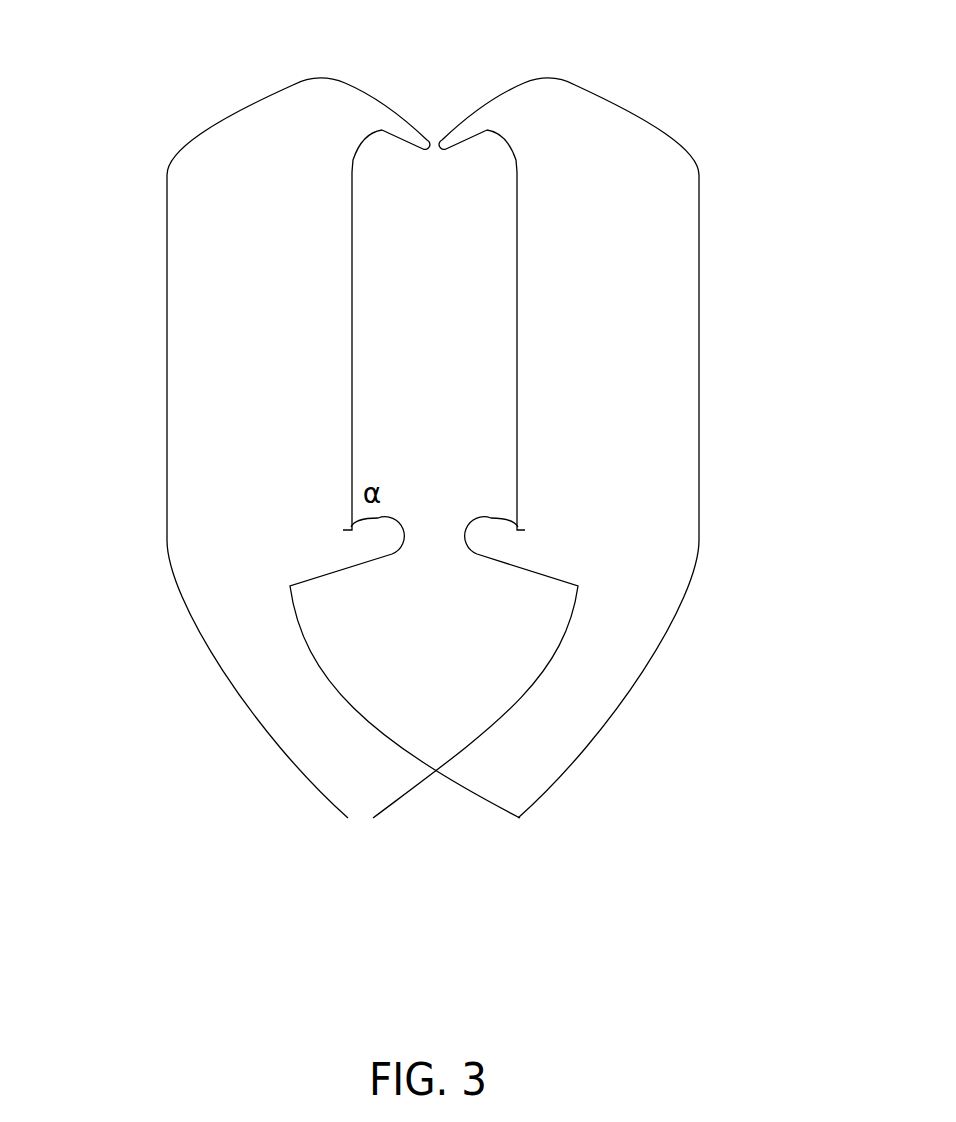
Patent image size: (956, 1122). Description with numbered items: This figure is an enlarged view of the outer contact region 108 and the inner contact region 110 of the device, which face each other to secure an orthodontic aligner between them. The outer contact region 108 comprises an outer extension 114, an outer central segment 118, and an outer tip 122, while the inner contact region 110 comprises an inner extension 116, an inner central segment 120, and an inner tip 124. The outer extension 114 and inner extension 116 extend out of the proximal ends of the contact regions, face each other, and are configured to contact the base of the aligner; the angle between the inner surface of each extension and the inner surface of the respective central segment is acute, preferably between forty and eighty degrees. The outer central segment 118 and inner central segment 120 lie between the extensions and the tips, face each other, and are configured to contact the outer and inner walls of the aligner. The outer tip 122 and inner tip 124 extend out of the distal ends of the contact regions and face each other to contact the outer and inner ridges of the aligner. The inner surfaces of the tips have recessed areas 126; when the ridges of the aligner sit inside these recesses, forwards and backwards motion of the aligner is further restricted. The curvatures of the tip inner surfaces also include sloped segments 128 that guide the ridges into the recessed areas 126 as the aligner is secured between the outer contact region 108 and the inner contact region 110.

The outer contact region 108 is at (185, 272).
The inner contact region 110 is at (683, 277).
The outer extension 114 is at (380, 542).
The inner extension 116 is at (497, 545).
The outer central segment 118 is at (352, 442).
The inner central segment 120 is at (517, 433).
The outer tip 122 is at (382, 115).
The inner tip 124 is at (482, 117).
The recessed areas 126 is at (381, 132).
The sloped segments 128 is at (502, 140).